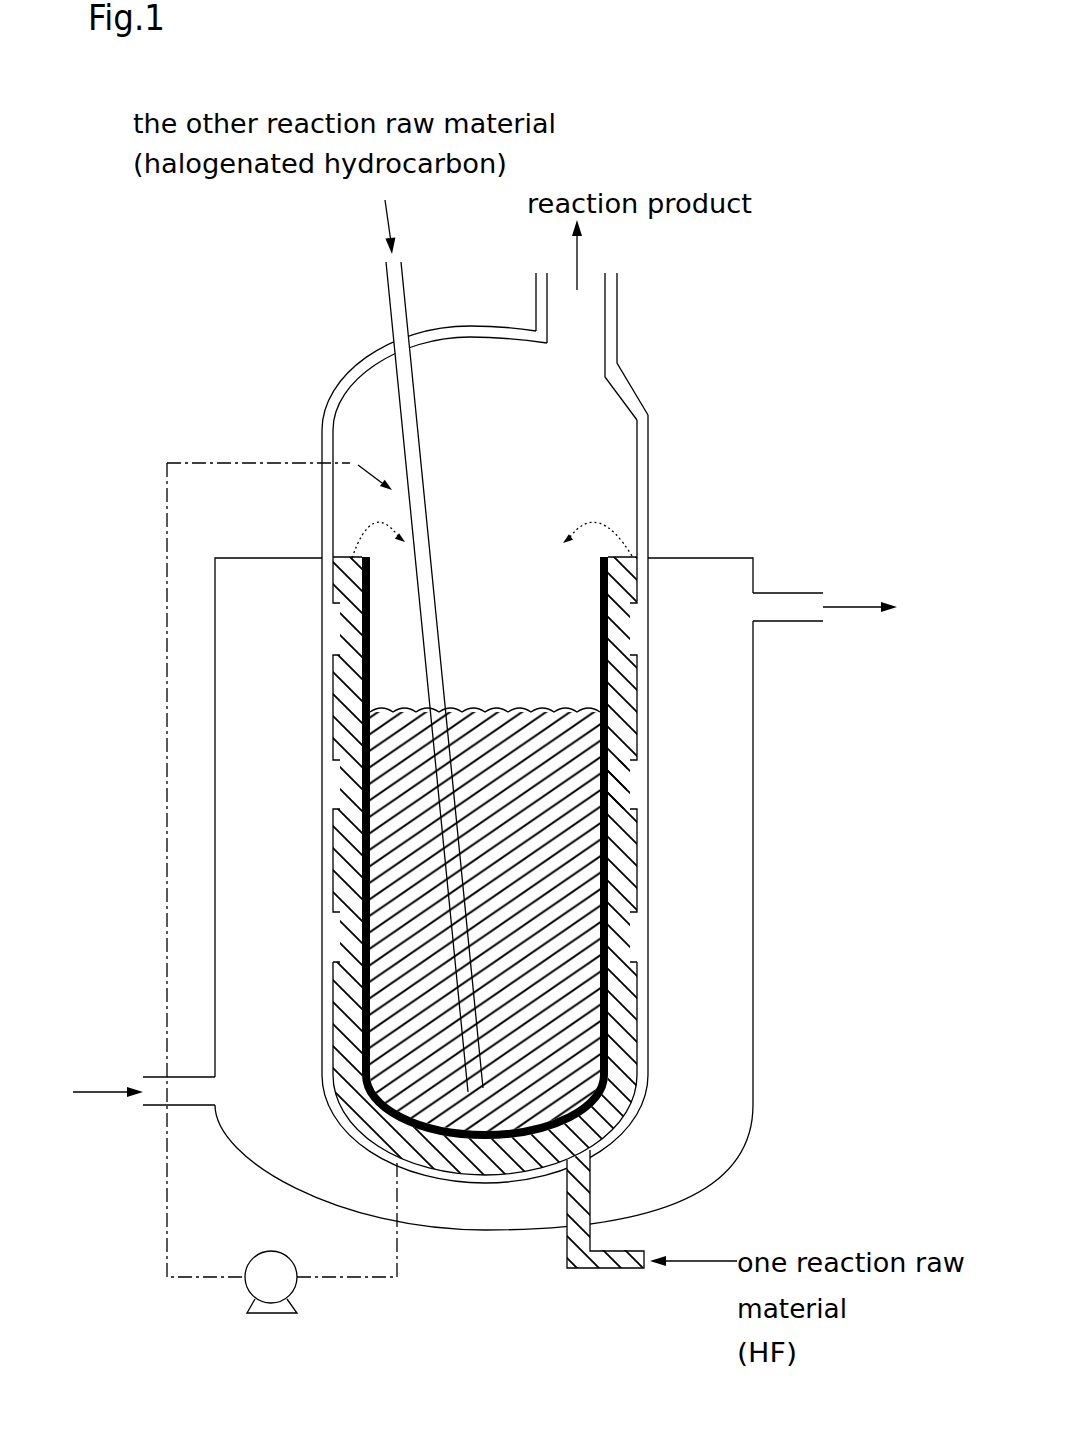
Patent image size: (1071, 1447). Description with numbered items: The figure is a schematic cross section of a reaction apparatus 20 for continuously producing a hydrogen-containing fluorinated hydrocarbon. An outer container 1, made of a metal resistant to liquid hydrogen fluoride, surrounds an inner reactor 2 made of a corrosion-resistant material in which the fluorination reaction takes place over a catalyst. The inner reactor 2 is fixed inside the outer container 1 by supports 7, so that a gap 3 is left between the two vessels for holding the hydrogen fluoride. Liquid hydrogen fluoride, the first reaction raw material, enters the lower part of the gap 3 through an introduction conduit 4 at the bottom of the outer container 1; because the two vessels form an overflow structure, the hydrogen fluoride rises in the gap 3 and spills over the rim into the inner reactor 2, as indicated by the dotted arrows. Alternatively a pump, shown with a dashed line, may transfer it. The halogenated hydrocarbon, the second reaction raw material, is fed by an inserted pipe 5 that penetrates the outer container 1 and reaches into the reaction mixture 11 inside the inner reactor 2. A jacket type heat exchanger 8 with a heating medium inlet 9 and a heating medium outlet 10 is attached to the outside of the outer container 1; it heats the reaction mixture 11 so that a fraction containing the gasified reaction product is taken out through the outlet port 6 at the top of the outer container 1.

The outer container 1 is at (648, 943).
The inner reactor 2 is at (613, 1015).
The gap 3 is at (620, 1073).
The introduction conduit 4 is at (610, 1268).
The inserted pipe 5 is at (388, 302).
The outlet port 6 is at (593, 282).
The supports 7 is at (625, 785).
The jacket type heat exchanger 8 is at (698, 578).
The heating medium inlet 9 is at (148, 1088).
The heating medium outlet 10 is at (815, 612).
The reaction mixture 11 is at (503, 737).
The reaction apparatus 20 is at (485, 760).